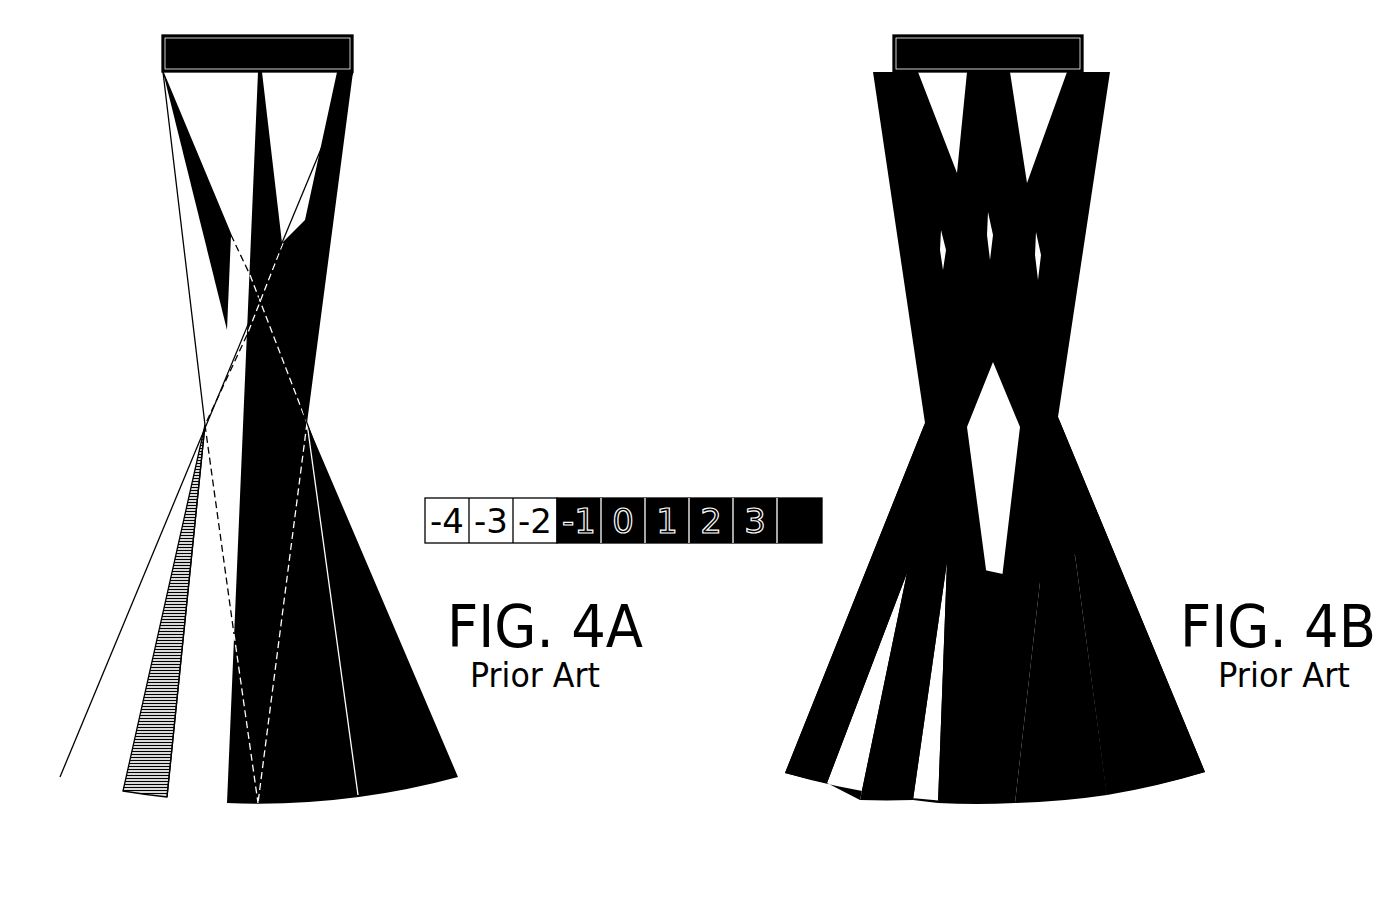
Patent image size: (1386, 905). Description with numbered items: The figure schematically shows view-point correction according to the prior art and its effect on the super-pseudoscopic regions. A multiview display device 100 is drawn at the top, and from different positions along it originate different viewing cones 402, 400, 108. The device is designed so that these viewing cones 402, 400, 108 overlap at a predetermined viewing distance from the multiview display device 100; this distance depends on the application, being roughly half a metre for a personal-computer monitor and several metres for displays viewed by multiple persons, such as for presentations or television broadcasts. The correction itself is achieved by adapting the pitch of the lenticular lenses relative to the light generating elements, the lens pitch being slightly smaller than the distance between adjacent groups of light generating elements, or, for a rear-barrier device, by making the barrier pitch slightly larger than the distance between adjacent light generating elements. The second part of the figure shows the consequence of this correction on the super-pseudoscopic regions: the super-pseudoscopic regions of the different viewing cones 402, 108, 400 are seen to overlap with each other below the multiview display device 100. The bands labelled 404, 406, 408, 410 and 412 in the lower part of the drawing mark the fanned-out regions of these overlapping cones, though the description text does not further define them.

In FIG. 4A, the multiview display device 100 is at (350, 50).
In FIG. 4B, the multiview display device 100 is at (1078, 42).
In FIG. 4A, the viewing cone 108 is at (310, 423).
In FIG. 4A, the viewing cone 400 is at (342, 167).
In FIG. 4A, the viewing cone 402 is at (177, 175).
In FIG. 4B, the first view beam 404 is at (802, 778).
In FIG. 4B, the second view beam 406 is at (892, 800).
In FIG. 4B, the third view beam 408 is at (993, 803).
In FIG. 4B, the fourth view beam 410 is at (1088, 798).
In FIG. 4B, the fifth view beam 412 is at (1195, 778).